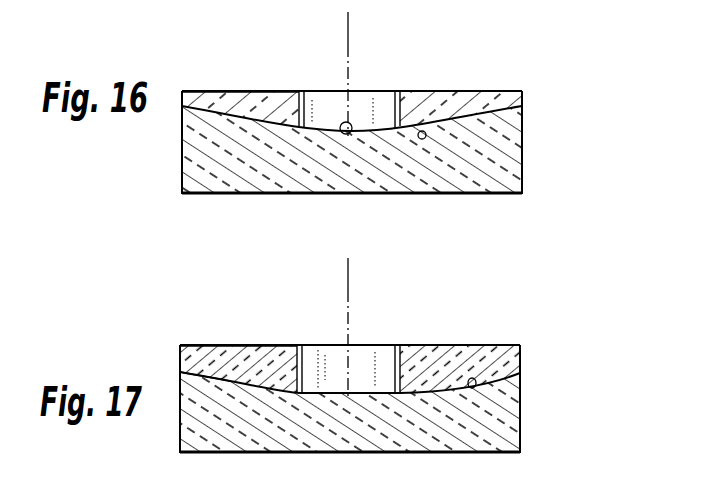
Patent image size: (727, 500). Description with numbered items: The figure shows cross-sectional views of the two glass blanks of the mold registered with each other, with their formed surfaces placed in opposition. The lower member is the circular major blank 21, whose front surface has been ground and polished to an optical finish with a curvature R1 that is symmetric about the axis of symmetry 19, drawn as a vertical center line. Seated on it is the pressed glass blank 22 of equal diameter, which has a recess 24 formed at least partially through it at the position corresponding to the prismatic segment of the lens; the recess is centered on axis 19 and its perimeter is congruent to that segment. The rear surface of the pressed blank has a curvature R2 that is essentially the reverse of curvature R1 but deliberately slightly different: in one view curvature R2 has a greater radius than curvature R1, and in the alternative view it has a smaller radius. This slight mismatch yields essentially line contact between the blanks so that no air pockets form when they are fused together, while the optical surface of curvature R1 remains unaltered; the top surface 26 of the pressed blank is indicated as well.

In FIG. 16, the axis of symmetry 19 is at (351, 30).
In FIG. 17, the axis of symmetry 19 is at (351, 284).
In FIG. 16, the major blank 21 is at (523, 142).
In FIG. 17, the major blank 21 is at (523, 415).
In FIG. 16, the pressed glass blank 22 is at (523, 93).
In FIG. 17, the pressed glass blank 22 is at (523, 343).
In FIG. 16, the recess 24 is at (318, 93).
In FIG. 17, the recess 24 is at (333, 356).
In FIG. 16, the top surface 26 is at (205, 91).
In FIG. 17, the top surface 26 is at (220, 346).
In FIG. 16, the curvature of the front surface of the major blank R1 is at (346, 134).
In FIG. 17, the curvature of the front surface of the major blank R1 is at (181, 373).
In FIG. 16, the curvature of the rear surface of the pressed blank R2 is at (434, 116).
In FIG. 17, the curvature of the rear surface of the pressed blank R2 is at (472, 378).